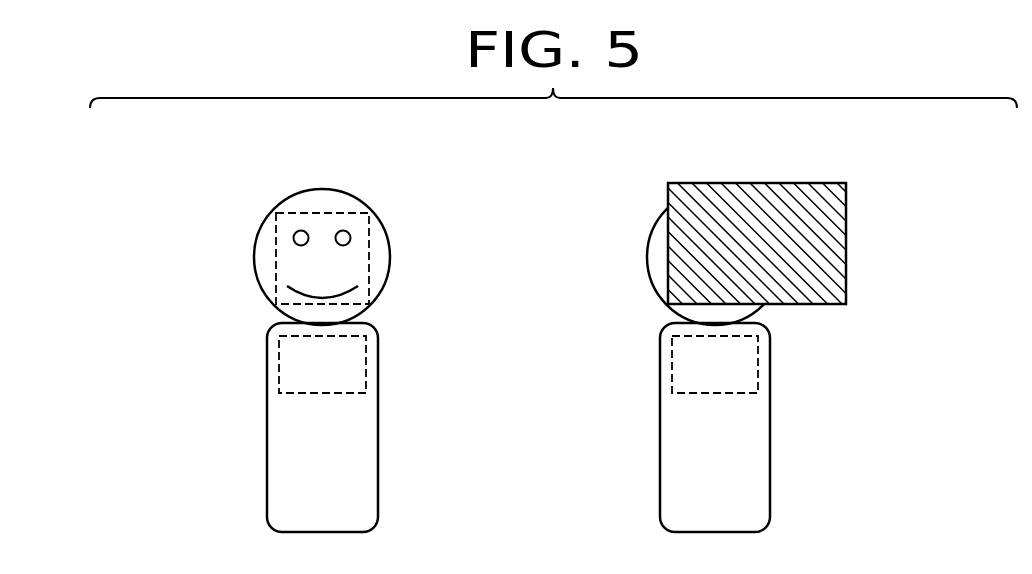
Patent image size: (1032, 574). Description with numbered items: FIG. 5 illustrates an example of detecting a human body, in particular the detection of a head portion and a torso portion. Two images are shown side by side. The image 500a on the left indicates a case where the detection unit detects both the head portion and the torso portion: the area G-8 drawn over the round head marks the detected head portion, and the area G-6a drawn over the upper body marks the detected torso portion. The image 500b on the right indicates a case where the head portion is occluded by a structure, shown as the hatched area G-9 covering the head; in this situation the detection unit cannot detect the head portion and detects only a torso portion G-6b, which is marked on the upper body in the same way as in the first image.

The image 500a is at (318, 360).
The image 500b is at (752, 357).
The area G-8 is at (369, 240).
The area G-9 is at (846, 230).
The area G-6a is at (366, 357).
The torso portion G-6b is at (758, 357).